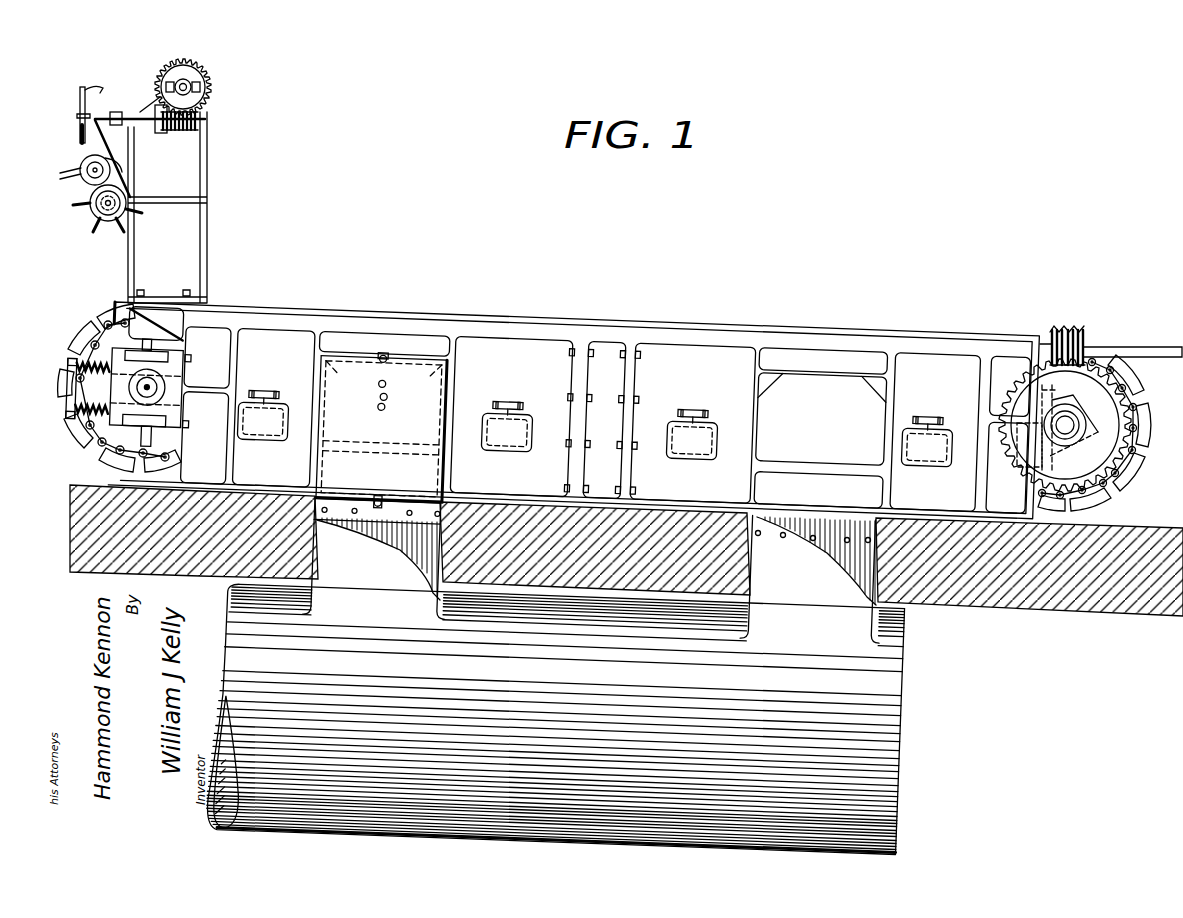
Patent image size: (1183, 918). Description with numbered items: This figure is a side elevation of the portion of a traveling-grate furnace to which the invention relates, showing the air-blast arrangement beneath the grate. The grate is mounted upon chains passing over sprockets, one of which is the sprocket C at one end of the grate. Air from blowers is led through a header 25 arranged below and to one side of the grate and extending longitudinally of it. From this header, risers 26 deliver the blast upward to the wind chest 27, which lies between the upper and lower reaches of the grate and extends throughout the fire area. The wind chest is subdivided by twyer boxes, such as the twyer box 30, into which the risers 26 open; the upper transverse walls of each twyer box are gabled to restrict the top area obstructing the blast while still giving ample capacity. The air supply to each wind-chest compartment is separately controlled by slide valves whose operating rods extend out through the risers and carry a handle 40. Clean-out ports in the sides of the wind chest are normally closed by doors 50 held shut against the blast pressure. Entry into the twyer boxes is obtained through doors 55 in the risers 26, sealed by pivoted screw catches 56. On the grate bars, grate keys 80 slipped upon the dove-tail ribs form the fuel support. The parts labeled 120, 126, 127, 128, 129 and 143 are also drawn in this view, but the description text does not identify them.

The header 25 is at (555, 718).
The risers 26 is at (592, 569).
The wind chest 27 is at (604, 419).
The twyer box 30 is at (821, 419).
The handle 40 is at (369, 394).
The doors 50 is at (595, 428).
The doors 55 is at (381, 429).
The pivoted screw catches 56 is at (389, 431).
The grate keys 80 is at (1138, 470).
The pulley 120 is at (88, 166).
The gear 126 is at (210, 75).
The worm 127 is at (180, 133).
The shaft 128 is at (150, 127).
The lever 129 is at (99, 105).
The hand wheel 143 is at (107, 222).
The sprocket C is at (92, 447).